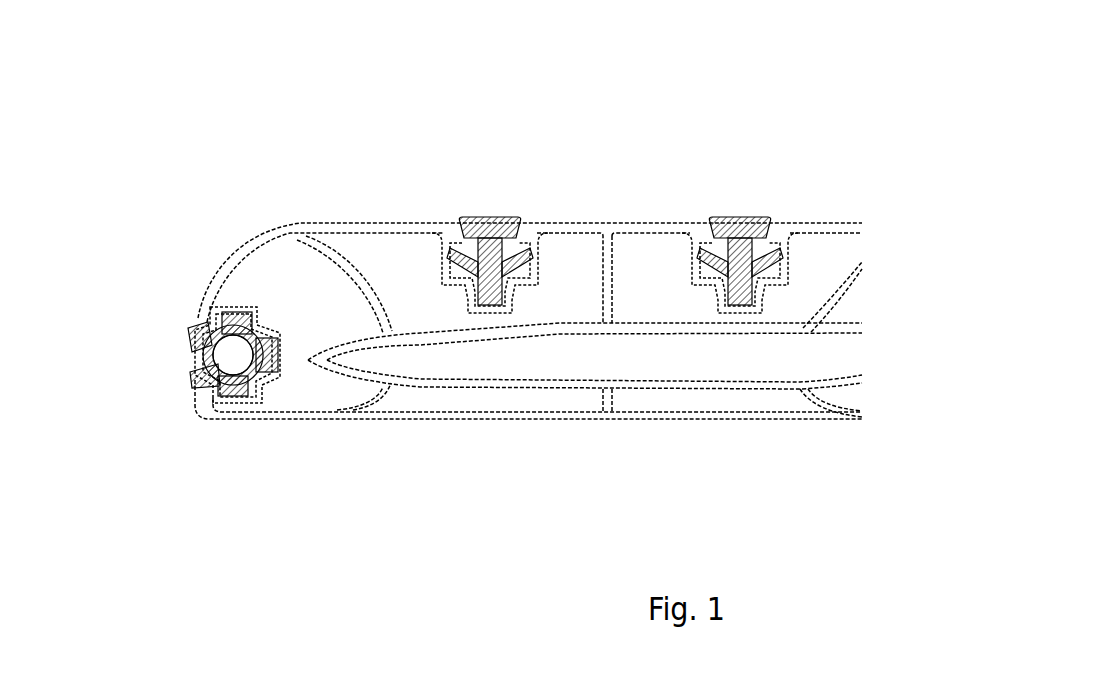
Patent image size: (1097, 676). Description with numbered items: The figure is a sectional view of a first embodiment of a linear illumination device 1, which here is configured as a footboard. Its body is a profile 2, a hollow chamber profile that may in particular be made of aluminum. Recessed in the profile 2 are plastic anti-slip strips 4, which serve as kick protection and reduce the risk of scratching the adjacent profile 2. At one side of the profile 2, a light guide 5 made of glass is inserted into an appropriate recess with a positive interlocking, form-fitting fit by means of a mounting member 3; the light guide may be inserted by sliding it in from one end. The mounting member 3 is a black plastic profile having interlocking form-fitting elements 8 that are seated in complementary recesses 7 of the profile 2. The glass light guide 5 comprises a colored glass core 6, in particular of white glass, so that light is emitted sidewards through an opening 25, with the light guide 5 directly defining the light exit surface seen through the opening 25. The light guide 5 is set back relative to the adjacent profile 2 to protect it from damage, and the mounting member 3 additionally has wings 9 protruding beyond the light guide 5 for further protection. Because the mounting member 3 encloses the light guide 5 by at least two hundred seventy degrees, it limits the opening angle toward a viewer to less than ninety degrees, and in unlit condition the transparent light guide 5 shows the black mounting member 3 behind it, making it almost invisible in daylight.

The linear illumination device 1 is at (217, 447).
The profile 2 is at (273, 236).
The mounting member 3 is at (210, 382).
The anti-slip strips 4 is at (483, 233).
The light guide 5 is at (220, 356).
The colored glass core 6 is at (233, 356).
The recesses 7 is at (275, 345).
The form-fitting elements 8 is at (230, 317).
The wings 9 is at (193, 327).
The opening 25 is at (192, 348).